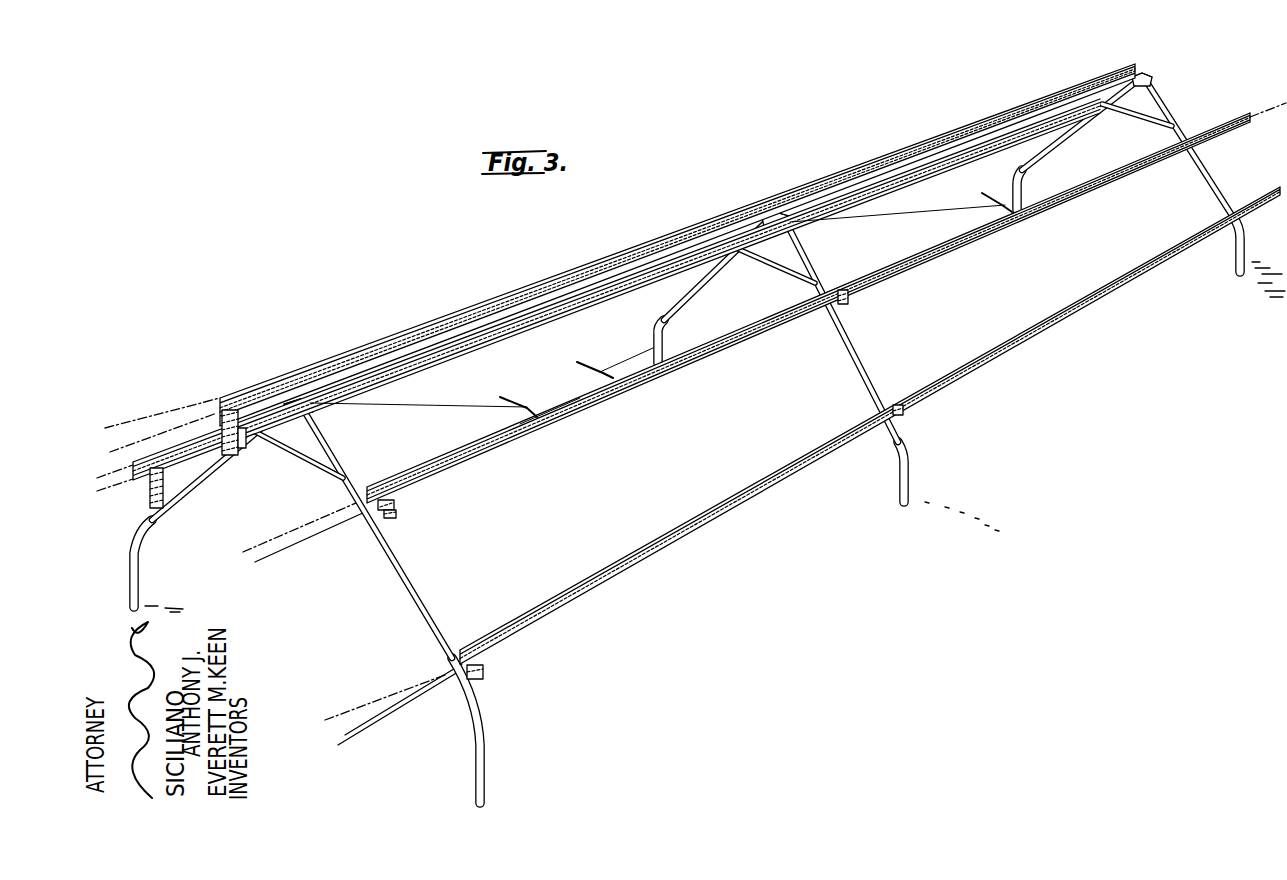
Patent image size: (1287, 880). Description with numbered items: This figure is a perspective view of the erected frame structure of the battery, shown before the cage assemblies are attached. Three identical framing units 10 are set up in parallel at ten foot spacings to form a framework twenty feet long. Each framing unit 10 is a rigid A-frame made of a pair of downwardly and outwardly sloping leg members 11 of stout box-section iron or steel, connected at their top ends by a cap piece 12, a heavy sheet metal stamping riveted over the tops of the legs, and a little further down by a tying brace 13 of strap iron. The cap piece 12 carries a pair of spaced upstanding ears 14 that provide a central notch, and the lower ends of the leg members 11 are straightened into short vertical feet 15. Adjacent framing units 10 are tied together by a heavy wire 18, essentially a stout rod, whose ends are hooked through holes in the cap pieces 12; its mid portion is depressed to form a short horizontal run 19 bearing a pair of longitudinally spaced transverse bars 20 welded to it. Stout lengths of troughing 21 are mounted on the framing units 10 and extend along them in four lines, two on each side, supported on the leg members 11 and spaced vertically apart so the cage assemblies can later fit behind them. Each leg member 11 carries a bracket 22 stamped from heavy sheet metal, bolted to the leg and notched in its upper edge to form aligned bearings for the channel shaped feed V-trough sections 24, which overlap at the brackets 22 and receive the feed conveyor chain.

The framing unit 10 is at (687, 416).
The leg member 11 is at (200, 492).
The cap piece 12 is at (316, 408).
The tying brace 13 is at (318, 468).
The upstanding ears 14 is at (290, 400).
The feet 15 is at (143, 572).
The heavy wire 18 is at (442, 402).
The horizontal run 19 is at (542, 393).
The transverse bars 20 is at (502, 397).
The troughing 21 is at (365, 350).
The bracket 22 is at (236, 430).
The feed V-trough section 24 is at (396, 516).